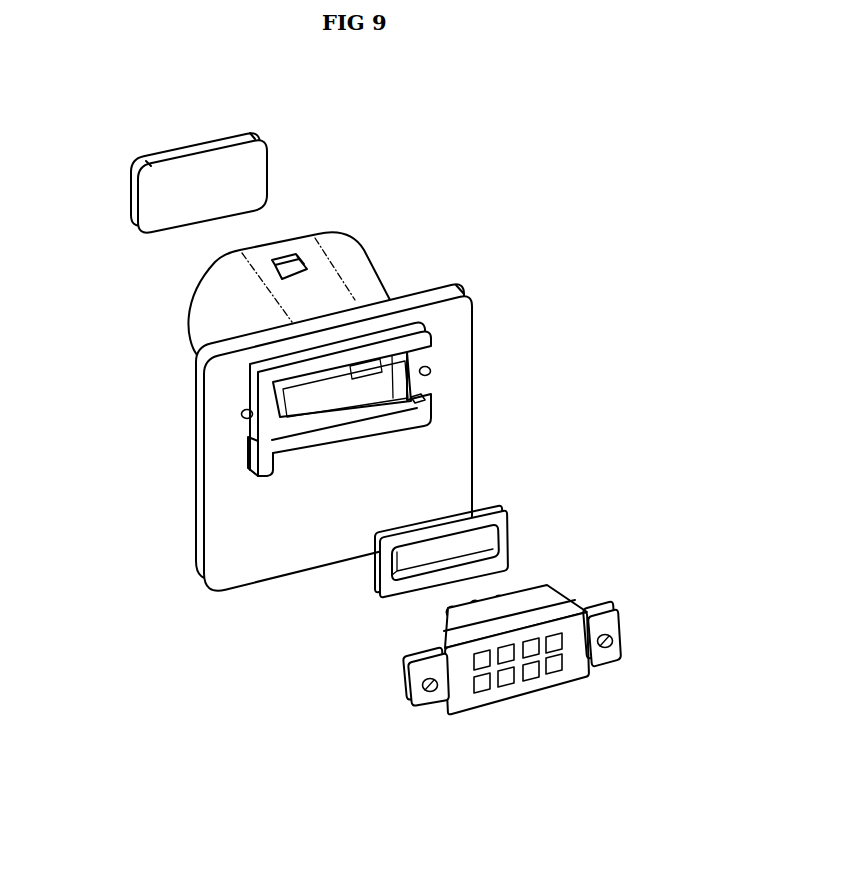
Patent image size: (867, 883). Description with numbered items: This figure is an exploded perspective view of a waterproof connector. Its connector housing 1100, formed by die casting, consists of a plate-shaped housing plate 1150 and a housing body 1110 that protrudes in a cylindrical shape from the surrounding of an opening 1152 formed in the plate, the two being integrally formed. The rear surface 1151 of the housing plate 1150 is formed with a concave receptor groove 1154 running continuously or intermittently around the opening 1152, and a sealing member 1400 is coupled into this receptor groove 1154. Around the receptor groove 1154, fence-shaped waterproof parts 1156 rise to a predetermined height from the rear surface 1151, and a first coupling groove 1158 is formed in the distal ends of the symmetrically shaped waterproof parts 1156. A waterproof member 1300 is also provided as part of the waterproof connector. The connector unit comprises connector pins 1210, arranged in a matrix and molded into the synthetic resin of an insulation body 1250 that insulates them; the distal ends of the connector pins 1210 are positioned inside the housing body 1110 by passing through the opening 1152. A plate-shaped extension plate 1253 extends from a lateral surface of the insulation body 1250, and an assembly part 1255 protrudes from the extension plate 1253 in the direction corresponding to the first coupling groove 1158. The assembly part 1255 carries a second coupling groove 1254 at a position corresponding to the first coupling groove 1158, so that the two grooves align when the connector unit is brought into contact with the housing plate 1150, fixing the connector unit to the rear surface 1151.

The connector housing 1100 is at (319, 373).
The housing body 1110 is at (180, 322).
The housing plate 1150 is at (370, 410).
The rear surface 1151 is at (222, 508).
The opening 1152 is at (431, 371).
The receptor groove 1154 is at (424, 398).
The waterproof parts 1156 is at (258, 392).
The first coupling groove 1158 is at (241, 415).
The waterproof member 1300 is at (282, 151).
The sealing member 1400 is at (527, 532).
The insulation body 1250 is at (552, 696).
The connector pin 1210 is at (531, 597).
The extension plate 1253 is at (533, 697).
The second coupling groove 1254 is at (423, 699).
The assembly part 1255 is at (620, 627).